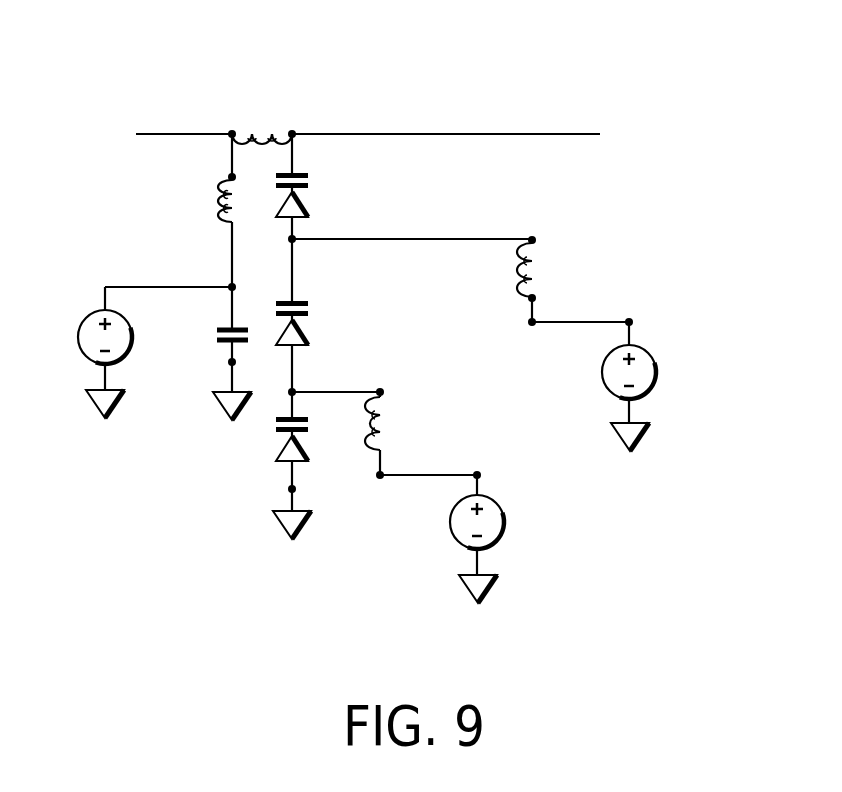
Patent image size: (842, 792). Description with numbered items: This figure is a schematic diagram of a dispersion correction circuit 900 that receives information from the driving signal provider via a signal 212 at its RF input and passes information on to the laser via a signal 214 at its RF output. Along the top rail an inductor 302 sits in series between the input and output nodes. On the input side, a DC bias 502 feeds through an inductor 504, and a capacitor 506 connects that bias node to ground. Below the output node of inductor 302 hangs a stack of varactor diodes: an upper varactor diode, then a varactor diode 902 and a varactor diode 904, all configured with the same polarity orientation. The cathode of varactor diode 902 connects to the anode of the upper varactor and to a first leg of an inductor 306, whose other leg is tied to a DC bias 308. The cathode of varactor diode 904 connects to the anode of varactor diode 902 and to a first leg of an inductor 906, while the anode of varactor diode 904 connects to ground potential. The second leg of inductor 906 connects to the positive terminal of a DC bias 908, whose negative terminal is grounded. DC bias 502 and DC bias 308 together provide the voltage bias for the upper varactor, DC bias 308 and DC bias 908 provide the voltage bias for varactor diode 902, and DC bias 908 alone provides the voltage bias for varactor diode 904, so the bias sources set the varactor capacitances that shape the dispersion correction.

The dispersion correction circuit 900 is at (692, 70).
The signal 212 is at (183, 138).
The signal 214 is at (566, 136).
The inductor 302 is at (277, 118).
The inductor 306 is at (547, 252).
The DC bias 308 is at (602, 372).
The DC bias 502 is at (97, 313).
The inductor 504 is at (218, 218).
The capacitor 506 is at (215, 340).
The varactor diode 902 is at (300, 300).
The varactor diode 904 is at (280, 446).
The inductor 906 is at (392, 405).
The DC bias 908 is at (450, 522).